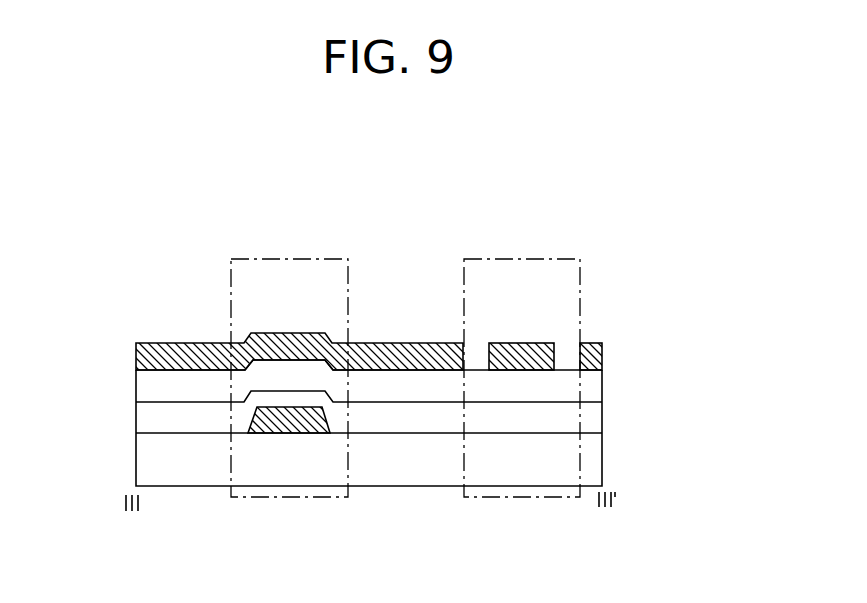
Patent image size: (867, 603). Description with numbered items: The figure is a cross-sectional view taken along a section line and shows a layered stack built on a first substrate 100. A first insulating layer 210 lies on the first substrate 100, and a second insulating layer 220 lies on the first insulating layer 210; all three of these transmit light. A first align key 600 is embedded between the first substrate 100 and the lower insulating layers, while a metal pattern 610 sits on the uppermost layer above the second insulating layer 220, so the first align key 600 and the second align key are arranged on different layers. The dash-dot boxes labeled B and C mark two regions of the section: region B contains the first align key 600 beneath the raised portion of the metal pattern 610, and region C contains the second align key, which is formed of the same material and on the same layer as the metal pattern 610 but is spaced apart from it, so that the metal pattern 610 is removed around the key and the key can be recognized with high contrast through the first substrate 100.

The first substrate 100 is at (140, 455).
The first insulating layer 210 is at (140, 417).
The second insulating layer 220 is at (140, 383).
The first align key 600 is at (287, 433).
The metal pattern 610 is at (287, 333).
The region B is at (247, 258).
The region C is at (481, 258).